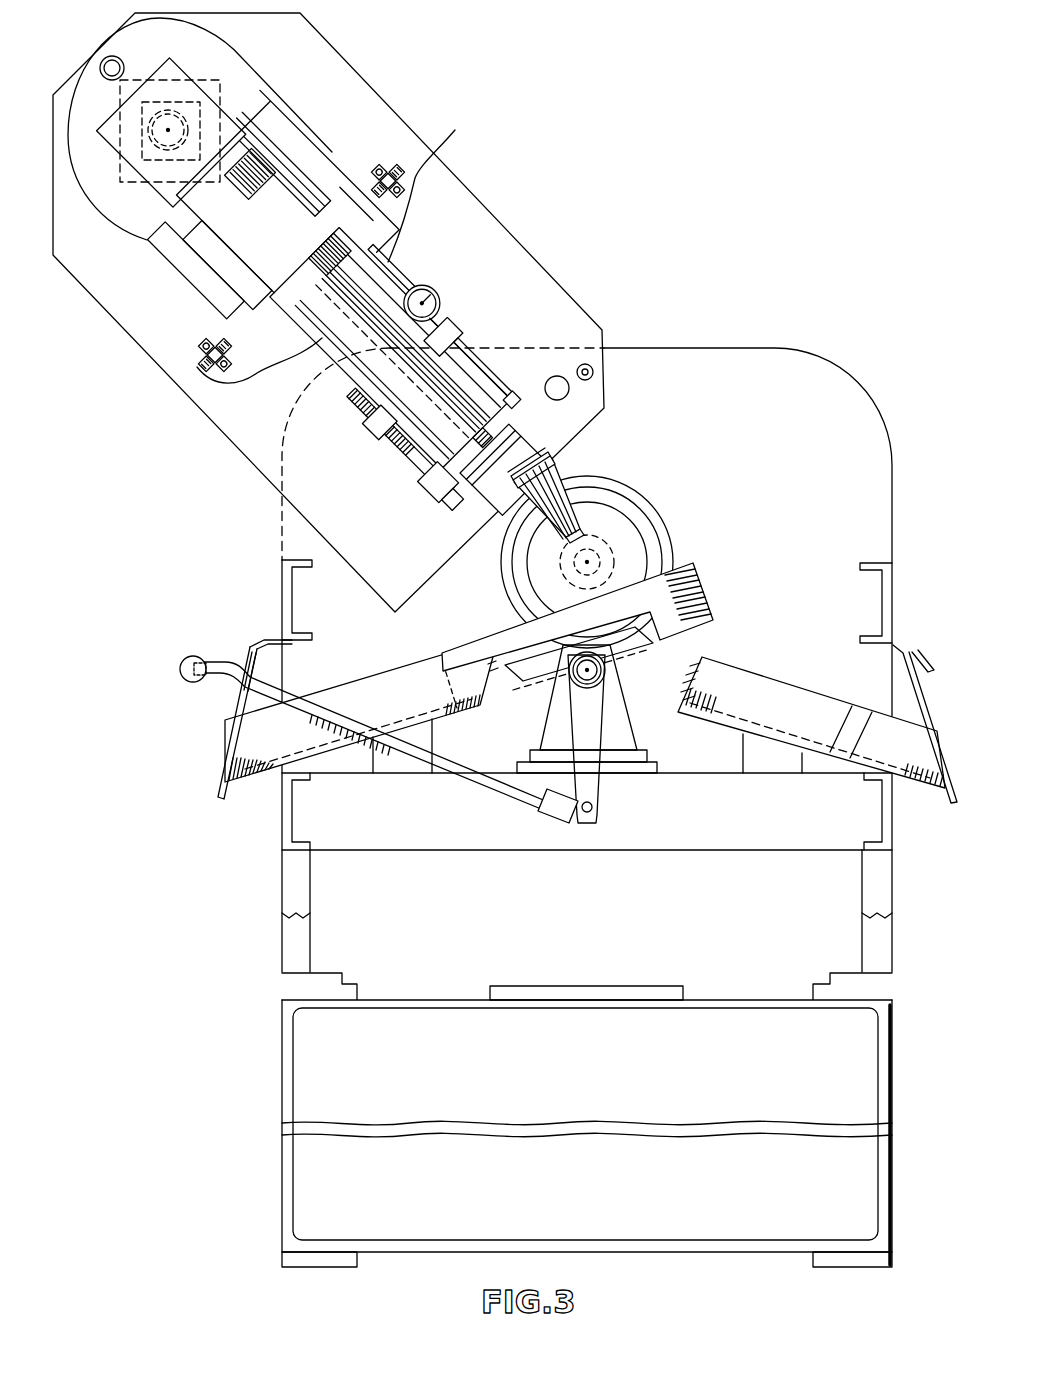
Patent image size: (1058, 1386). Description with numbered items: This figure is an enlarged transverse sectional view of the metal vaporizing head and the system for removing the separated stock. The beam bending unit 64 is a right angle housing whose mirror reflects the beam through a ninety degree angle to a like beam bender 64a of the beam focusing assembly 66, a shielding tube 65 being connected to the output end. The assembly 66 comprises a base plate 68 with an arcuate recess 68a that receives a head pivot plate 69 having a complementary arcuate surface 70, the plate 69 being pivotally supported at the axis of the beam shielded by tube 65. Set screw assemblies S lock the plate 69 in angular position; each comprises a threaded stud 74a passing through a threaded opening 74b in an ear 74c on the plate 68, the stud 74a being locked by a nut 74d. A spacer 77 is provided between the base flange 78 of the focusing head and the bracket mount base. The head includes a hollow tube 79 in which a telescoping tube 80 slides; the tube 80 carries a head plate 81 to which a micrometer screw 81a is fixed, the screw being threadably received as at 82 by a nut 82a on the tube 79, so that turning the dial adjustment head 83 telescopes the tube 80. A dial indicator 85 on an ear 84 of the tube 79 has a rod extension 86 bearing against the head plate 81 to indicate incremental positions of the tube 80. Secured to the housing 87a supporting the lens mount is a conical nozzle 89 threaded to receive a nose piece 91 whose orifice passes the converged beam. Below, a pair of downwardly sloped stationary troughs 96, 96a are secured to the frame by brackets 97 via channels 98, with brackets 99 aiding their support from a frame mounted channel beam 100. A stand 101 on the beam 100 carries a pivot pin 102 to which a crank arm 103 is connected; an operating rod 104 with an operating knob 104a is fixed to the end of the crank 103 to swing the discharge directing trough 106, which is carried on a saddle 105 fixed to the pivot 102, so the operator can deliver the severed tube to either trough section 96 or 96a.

The beam bending unit 64 is at (220, 100).
The beam bender 64a is at (237, 117).
The shielding tube 65 is at (183, 100).
The beam focusing assembly 66 is at (477, 183).
The base plate 68 is at (112, 286).
The arcuate recess 68a is at (435, 184).
The head pivot plate 69 is at (131, 212).
The arcuate surface 70 is at (250, 377).
The threaded stud 74a is at (192, 373).
The threaded opening 74b is at (213, 332).
The ear 74c is at (205, 347).
The nut 74d is at (211, 376).
The set screw assembly S is at (390, 158).
The spacer 77 is at (330, 163).
The base flange 78 is at (260, 288).
The hollow tube 79 is at (318, 212).
The telescoping tube 80 is at (347, 236).
The head plate 81 is at (428, 488).
The micrometer screw 81a is at (414, 463).
The threaded engagement 82 is at (369, 438).
The nut 82a is at (388, 446).
The dial adjustment head 83 is at (443, 500).
The ear 84 is at (456, 332).
The dial indicator 85 is at (432, 291).
The rod extension 86 is at (496, 378).
The housing 87a is at (514, 427).
The conical nozzle 89 is at (556, 492).
The nose piece 91 is at (552, 542).
The stationary trough 96 is at (401, 711).
The stationary trough 96a is at (796, 726).
The bracket 97 is at (910, 650).
The channel 98 is at (893, 587).
The bracket 99 is at (765, 769).
The channel beam 100 is at (686, 827).
The stand 101 is at (620, 722).
The pivot pin 102 is at (578, 682).
The crank arm 103 is at (596, 805).
The operating rod 104 is at (540, 800).
The operating knob 104a is at (193, 683).
The saddle 105 is at (694, 581).
The discharge directing trough 106 is at (665, 633).